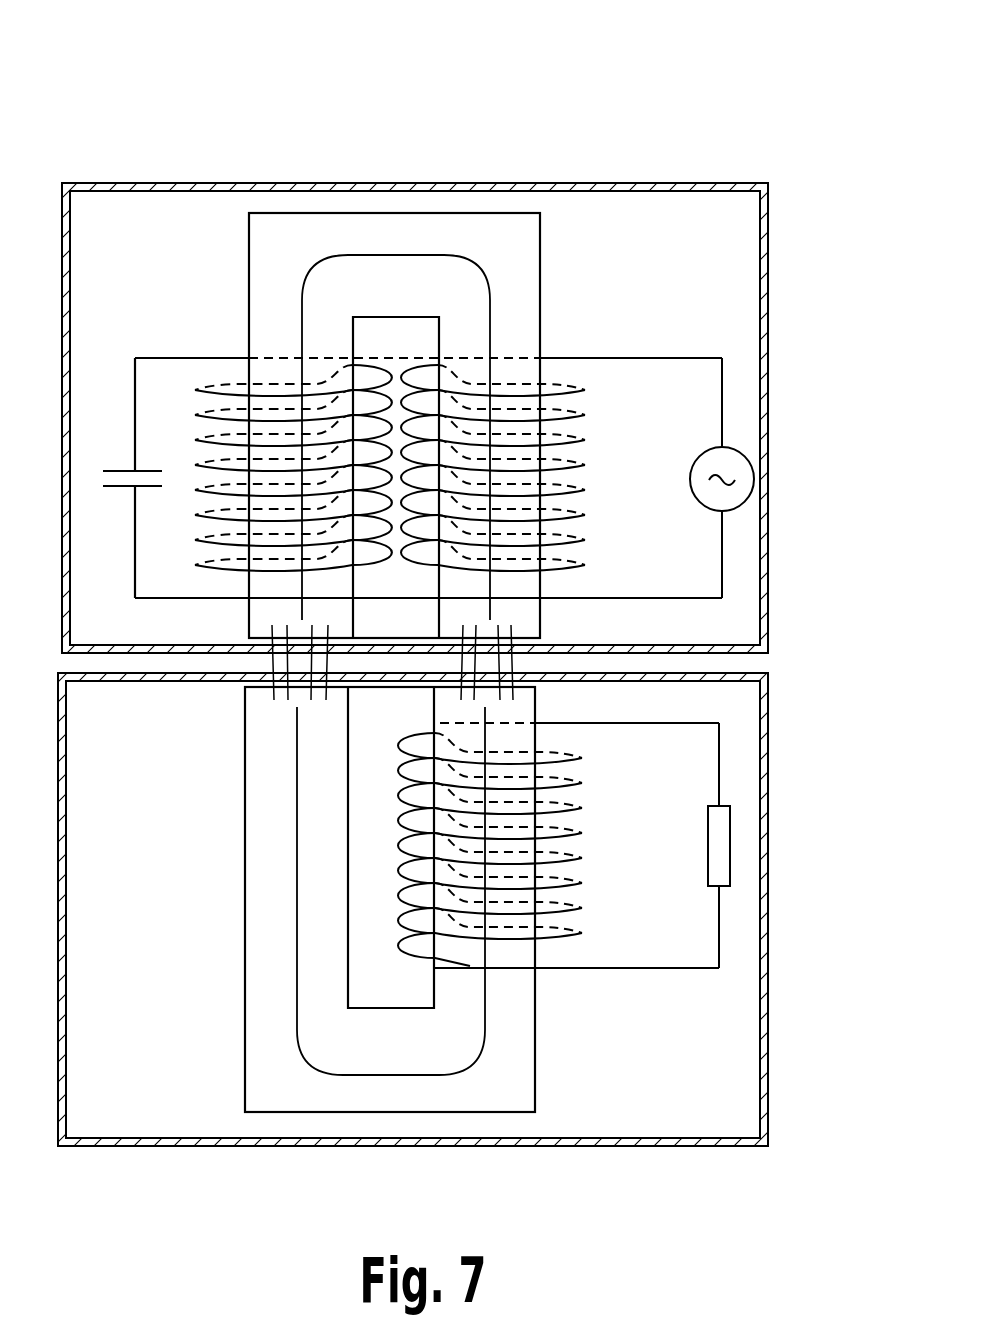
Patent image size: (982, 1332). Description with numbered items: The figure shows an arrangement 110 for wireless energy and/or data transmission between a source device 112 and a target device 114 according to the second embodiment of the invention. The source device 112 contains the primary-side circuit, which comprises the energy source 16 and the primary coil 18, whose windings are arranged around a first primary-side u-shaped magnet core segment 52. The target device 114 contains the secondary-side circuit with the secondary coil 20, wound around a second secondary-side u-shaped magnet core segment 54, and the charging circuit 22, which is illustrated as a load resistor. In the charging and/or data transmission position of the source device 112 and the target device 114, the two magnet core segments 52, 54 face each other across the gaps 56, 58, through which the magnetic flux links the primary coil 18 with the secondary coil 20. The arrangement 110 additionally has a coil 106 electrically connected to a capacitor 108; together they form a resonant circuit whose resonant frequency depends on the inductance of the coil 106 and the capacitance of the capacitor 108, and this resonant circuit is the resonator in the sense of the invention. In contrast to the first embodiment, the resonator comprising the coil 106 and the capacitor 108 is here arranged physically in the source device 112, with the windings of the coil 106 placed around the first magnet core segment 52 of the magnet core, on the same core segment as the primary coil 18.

The arrangement 110 is at (590, 55).
The source device 112 is at (770, 301).
The target device 114 is at (770, 713).
The first primary-side u-shaped magnet core segment 52 is at (520, 261).
The second secondary-side u-shaped magnet core segment 54 is at (514, 711).
The coil 106 is at (200, 463).
The primary coil 18 is at (590, 487).
The secondary coil 20 is at (588, 853).
The energy source 16 is at (742, 482).
The charging circuit 22 is at (720, 846).
The capacitor 108 is at (129, 494).
The gap 56 is at (250, 665).
The gap 58 is at (538, 665).